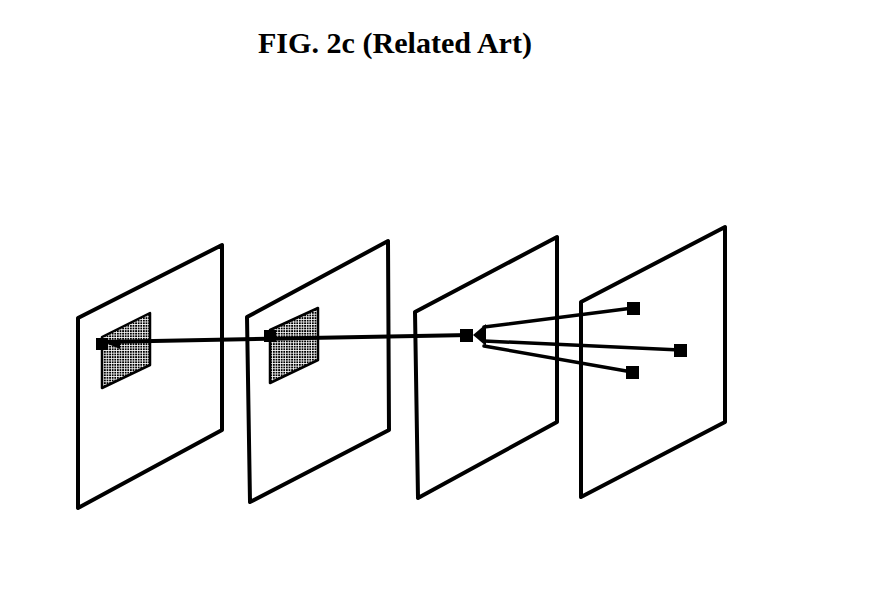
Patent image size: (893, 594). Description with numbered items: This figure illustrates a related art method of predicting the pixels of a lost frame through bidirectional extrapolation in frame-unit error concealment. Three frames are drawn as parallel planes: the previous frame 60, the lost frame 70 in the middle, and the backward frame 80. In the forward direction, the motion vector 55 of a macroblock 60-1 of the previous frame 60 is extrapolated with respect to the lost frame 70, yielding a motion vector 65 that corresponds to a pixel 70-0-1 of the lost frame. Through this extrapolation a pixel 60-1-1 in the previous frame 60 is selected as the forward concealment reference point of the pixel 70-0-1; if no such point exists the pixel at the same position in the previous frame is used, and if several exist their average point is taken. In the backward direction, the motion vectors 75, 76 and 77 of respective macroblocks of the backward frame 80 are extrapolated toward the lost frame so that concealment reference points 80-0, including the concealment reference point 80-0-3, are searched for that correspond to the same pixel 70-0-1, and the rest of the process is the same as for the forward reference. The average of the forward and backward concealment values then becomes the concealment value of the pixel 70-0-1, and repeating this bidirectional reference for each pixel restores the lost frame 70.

The motion vector 55 is at (198, 337).
The frame 60 is at (313, 277).
The macroblock 60-1 is at (293, 380).
The pixel 60-1-1 is at (270, 342).
The motion vector 65 is at (367, 333).
The frame 70 is at (482, 277).
The pixel 70-0-1 is at (467, 342).
The motion vector 75 is at (600, 293).
The motion vector 76 is at (581, 316).
The motion vector 77 is at (568, 343).
The backward frame 80 is at (652, 262).
The concealment reference point 80-0 is at (640, 306).
The concealment reference point 80-0-3 is at (632, 379).